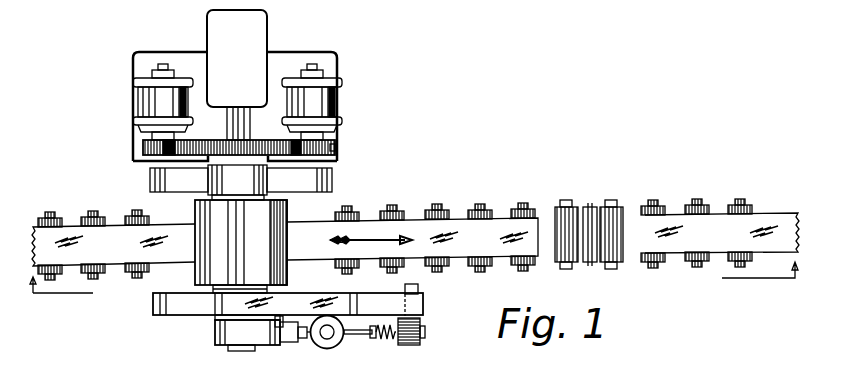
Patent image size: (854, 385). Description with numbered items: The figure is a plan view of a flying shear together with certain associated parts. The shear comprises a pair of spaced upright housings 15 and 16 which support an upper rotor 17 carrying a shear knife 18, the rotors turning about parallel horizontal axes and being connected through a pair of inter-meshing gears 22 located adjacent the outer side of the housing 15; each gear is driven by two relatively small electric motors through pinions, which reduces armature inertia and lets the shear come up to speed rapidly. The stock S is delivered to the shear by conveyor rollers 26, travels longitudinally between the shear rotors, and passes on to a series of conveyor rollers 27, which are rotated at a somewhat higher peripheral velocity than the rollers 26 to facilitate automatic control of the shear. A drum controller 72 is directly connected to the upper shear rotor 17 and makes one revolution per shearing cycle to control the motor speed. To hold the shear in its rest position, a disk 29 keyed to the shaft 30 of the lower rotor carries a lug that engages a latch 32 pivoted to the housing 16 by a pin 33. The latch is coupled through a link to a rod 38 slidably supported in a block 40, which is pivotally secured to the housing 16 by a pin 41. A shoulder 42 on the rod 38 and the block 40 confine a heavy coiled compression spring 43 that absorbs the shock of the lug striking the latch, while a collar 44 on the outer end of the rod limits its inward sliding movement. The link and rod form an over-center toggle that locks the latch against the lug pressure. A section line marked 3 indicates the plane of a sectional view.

The drum controller 72 is at (237, 58).
The inter-meshing gears 22 is at (218, 147).
The upright housing 15 is at (155, 180).
The shear knife 18 is at (243, 222).
The upper rotor 17 is at (288, 218).
The stock S is at (415, 239).
The conveyor rollers 26 is at (128, 276).
The conveyor rollers 27 is at (688, 262).
The section line 3 is at (410, 272).
The upright housing 16 is at (174, 312).
The pin 41 is at (418, 288).
The disk 29 is at (216, 336).
The shaft 30 is at (243, 351).
The latch 32 is at (289, 342).
The pin 33 is at (300, 339).
The rod 38 is at (351, 335).
The shoulder 42 is at (375, 340).
The coiled compression spring 43 is at (386, 340).
The block 40 is at (408, 343).
The collar 44 is at (426, 334).